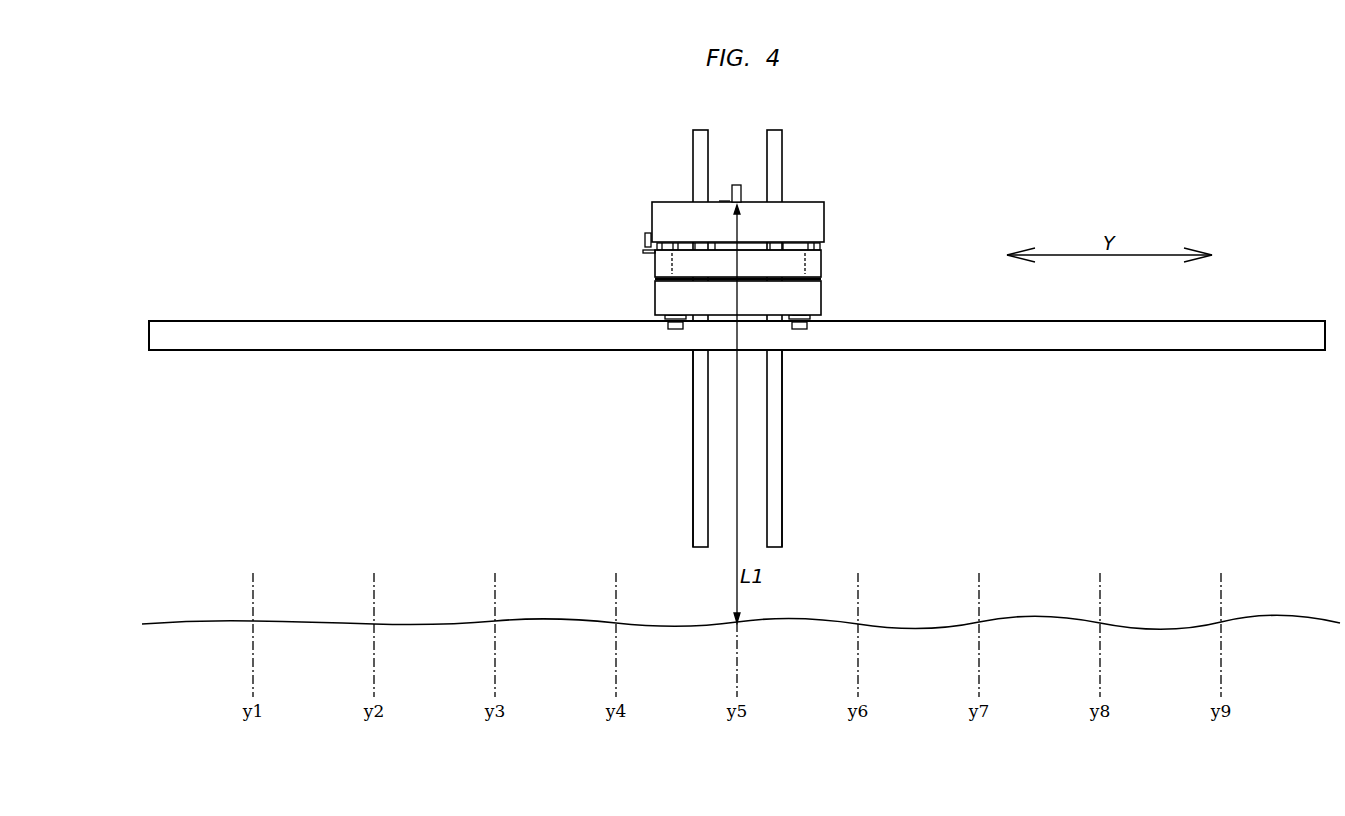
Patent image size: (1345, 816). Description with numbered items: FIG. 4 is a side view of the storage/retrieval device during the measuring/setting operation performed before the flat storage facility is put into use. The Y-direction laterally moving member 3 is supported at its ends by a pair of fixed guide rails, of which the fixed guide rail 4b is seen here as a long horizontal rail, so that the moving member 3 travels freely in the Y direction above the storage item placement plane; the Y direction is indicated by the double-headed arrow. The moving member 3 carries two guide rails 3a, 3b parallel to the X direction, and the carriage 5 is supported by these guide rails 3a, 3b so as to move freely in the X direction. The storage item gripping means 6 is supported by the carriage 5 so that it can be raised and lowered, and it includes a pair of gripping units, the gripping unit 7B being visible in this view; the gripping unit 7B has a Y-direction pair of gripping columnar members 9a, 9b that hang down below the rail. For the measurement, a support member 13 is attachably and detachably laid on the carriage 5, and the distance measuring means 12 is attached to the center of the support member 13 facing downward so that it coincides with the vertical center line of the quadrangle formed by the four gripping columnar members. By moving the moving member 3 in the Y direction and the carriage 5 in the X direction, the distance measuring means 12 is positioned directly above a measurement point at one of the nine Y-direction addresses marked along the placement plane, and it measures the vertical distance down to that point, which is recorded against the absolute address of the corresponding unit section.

The Y-direction laterally moving member 3 is at (656, 285).
The guide rail 3a is at (655, 265).
The guide rail 3b is at (821, 268).
The fixed guide rail 4b is at (442, 326).
The carriage 5 is at (812, 218).
The storage item gripping means 6 is at (692, 415).
The gripping unit 7B is at (783, 435).
The gripping columnar member 9a is at (700, 478).
The gripping columnar member 9b is at (776, 487).
The distance measuring means 12 is at (742, 192).
The support member 13 is at (729, 200).